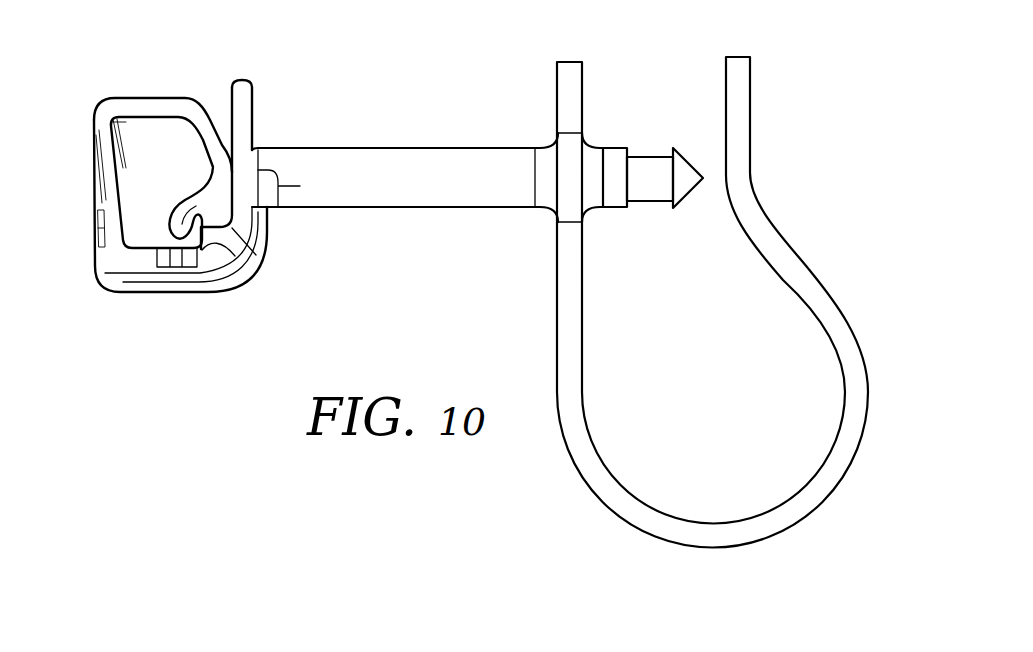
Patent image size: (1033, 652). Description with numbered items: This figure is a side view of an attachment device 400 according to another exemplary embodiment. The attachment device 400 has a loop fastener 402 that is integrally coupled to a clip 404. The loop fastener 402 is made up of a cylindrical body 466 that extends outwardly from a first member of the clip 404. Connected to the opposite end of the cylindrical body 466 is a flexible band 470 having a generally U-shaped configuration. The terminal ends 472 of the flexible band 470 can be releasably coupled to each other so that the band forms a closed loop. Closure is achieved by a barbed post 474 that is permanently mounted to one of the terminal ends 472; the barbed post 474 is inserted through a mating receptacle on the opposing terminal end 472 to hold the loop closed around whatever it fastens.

The attachment device 400 is at (803, 31).
The loop fastener 402 is at (388, 138).
The clip 404 is at (90, 287).
The cylindrical body 466 is at (410, 187).
The flexible band 470 is at (817, 285).
The terminal ends 472 is at (733, 82).
The barbed post 474 is at (651, 187).